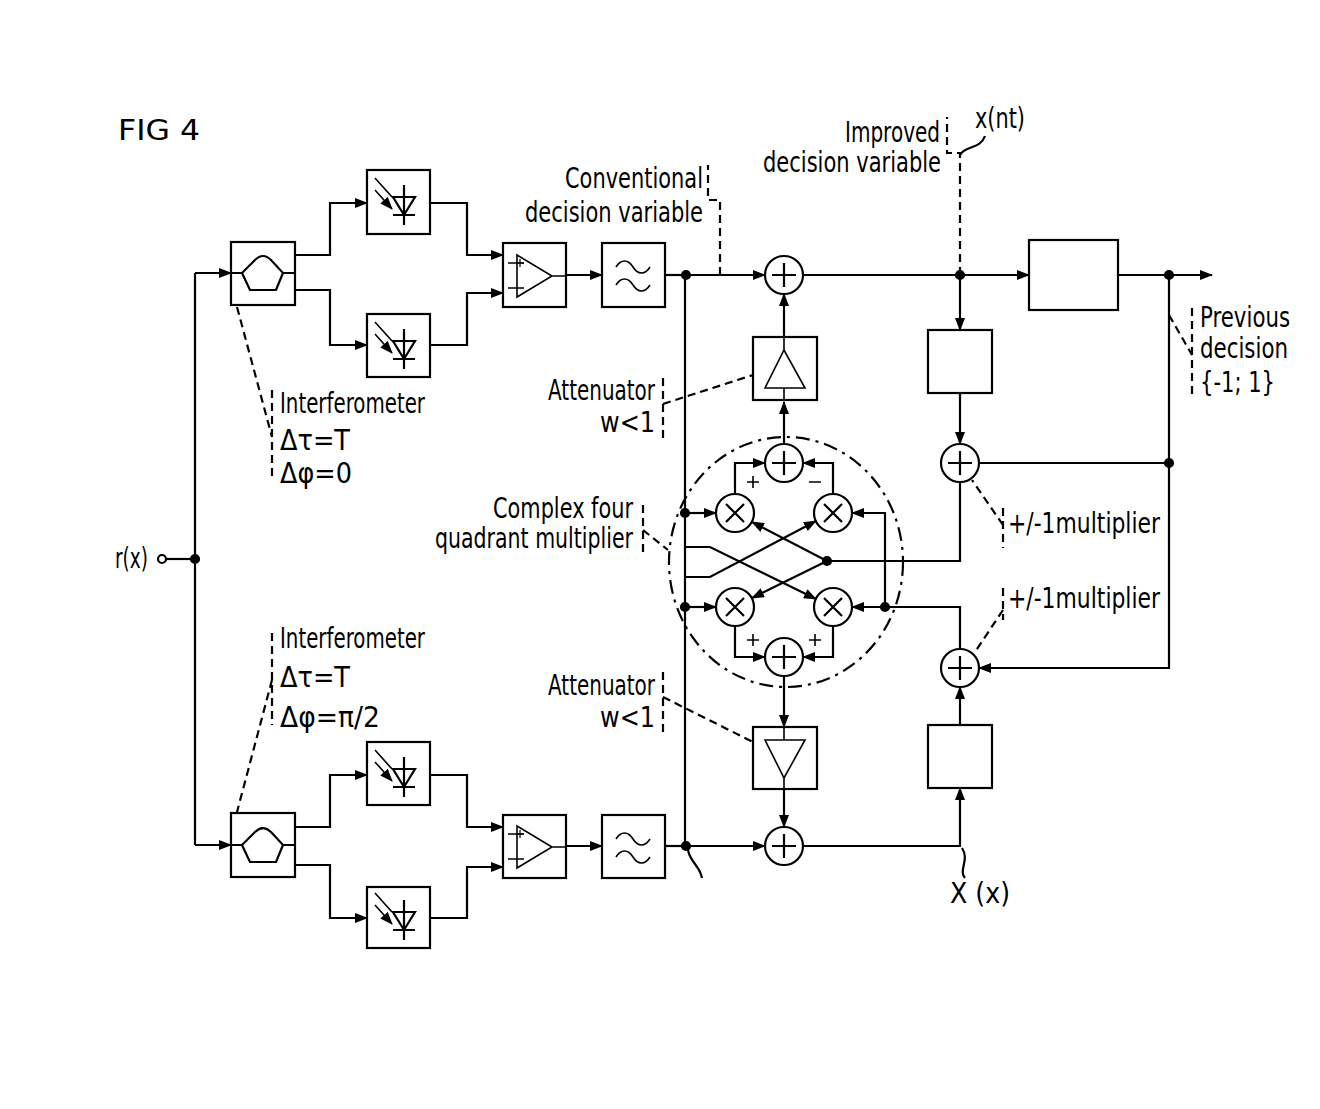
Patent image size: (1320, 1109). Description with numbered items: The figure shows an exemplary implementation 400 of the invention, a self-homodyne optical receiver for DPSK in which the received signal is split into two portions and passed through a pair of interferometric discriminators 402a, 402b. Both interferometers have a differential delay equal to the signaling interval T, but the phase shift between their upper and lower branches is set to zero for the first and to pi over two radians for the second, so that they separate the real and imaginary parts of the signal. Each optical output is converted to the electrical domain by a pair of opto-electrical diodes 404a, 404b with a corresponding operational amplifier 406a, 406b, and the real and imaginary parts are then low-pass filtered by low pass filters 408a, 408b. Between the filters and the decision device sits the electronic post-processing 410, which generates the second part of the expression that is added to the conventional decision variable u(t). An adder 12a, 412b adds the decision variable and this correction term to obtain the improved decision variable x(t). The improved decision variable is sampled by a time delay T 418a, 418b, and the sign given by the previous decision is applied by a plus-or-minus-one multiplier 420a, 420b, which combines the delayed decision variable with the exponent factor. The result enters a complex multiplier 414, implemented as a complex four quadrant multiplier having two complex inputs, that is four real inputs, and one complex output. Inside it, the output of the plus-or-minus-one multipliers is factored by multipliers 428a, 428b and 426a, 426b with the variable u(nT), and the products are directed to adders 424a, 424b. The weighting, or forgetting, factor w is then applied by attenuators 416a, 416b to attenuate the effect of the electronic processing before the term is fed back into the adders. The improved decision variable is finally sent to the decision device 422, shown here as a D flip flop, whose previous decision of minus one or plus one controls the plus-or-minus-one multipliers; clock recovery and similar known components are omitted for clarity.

The exemplary implementation 400 is at (1175, 180).
The interferometric discriminator 402a is at (262, 242).
The interferometric discriminator 402b is at (263, 877).
The opto-electrical diodes 404a is at (405, 258).
The opto-electrical diodes 404b is at (404, 830).
The operational amplifier 406a is at (533, 307).
The operational amplifier 406b is at (527, 815).
The low pass filter 408a is at (630, 307).
The low pass filter 408b is at (630, 815).
The electronic post-processing 410 is at (642, 580).
The adder 12a is at (784, 256).
The adder 412b is at (797, 862).
The complex multiplier 414 is at (821, 436).
The attenuator 416a is at (817, 361).
The attenuator 416b is at (817, 760).
The time delay T 418a is at (992, 355).
The time delay T 418b is at (992, 773).
The +/-1 multiplier 420a is at (975, 450).
The +/-1 multiplier 420b is at (977, 681).
The D flip-flop 422 is at (1075, 240).
The adder 424a is at (768, 452).
The adder 424b is at (797, 670).
The multiplier 426a is at (847, 499).
The multiplier 426b is at (847, 618).
The multiplier 428a is at (720, 506).
The multiplier 428b is at (722, 620).